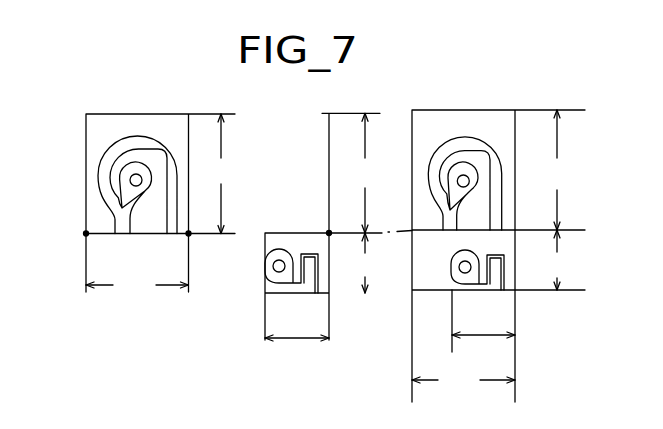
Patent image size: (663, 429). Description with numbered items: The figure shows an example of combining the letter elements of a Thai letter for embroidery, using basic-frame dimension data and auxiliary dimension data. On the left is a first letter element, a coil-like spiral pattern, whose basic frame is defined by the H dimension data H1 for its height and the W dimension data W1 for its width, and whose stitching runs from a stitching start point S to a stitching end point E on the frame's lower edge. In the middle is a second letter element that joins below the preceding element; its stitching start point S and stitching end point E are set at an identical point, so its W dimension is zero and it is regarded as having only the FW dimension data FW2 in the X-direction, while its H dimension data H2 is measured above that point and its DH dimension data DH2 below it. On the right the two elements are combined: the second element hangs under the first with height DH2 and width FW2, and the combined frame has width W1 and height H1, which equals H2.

The stitching start point S is at (85, 235).
The stitching end point E is at (189, 235).
The H dimension data of first letter element H1 is at (422, 172).
The W dimension data of first letter element W1 is at (300, 333).
The H dimension data of second letter element H2 is at (365, 173).
The DH dimension data of second letter element DH2 is at (461, 261).
The FW dimension data of second letter element FW2 is at (390, 321).